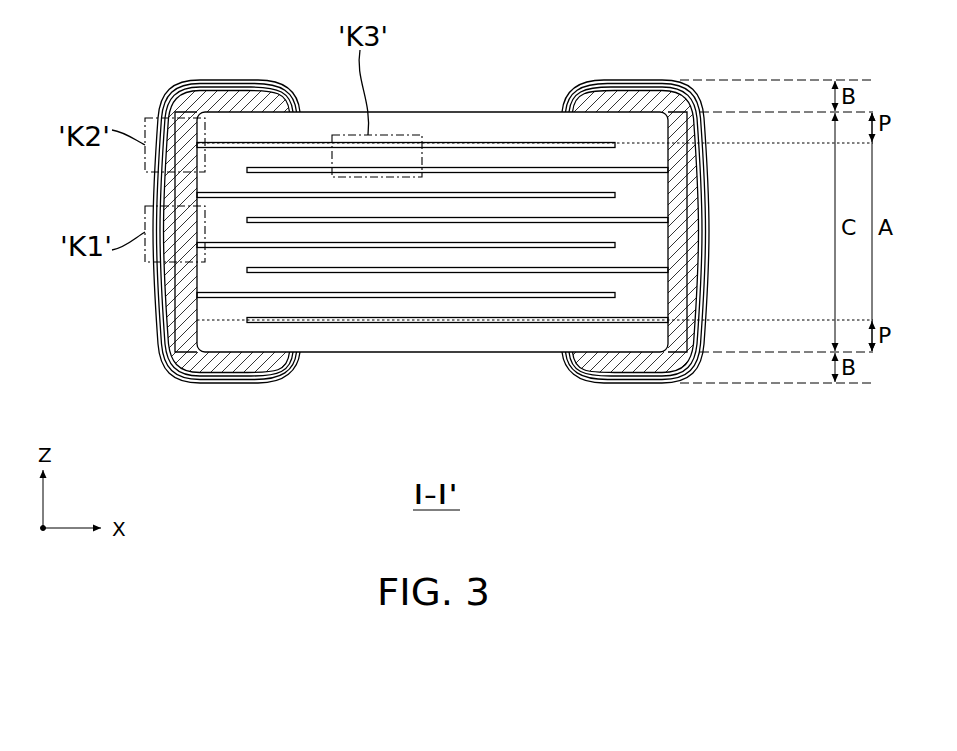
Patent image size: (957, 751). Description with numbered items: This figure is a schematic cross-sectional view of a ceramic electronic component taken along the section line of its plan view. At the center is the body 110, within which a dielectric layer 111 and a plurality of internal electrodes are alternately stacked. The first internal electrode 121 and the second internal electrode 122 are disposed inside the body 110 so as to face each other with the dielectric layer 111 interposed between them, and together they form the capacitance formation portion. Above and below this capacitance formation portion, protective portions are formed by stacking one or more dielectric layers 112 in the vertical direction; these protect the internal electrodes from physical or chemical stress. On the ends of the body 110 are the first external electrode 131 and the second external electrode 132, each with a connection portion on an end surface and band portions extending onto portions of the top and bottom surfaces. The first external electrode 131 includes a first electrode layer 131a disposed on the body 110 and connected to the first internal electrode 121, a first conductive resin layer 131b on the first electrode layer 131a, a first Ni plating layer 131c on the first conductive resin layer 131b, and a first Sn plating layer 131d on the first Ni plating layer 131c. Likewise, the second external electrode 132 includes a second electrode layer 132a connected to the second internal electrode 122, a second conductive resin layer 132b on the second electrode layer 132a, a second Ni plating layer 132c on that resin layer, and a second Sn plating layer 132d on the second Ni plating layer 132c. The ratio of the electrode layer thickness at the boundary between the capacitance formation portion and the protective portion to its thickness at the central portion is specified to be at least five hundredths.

The body 110 is at (330, 112).
The dielectric layer 111 is at (500, 158).
The dielectric layer 112 is at (402, 122).
The first internal electrode 121 is at (548, 143).
The second internal electrode 122 is at (458, 168).
The first external electrode 131 is at (166, 231).
The first electrode layer 131a is at (175, 274).
The first conductive resin layer 131b is at (163, 298).
The first Ni plating layer 131c is at (160, 320).
The first Sn plating layer 131d is at (78, 283).
The second external electrode 132 is at (692, 231).
The second electrode layer 132a is at (692, 210).
The second conductive resin layer 132b is at (700, 245).
The second Ni plating layer 132c is at (704, 270).
The second Sn plating layer 132d is at (707, 296).